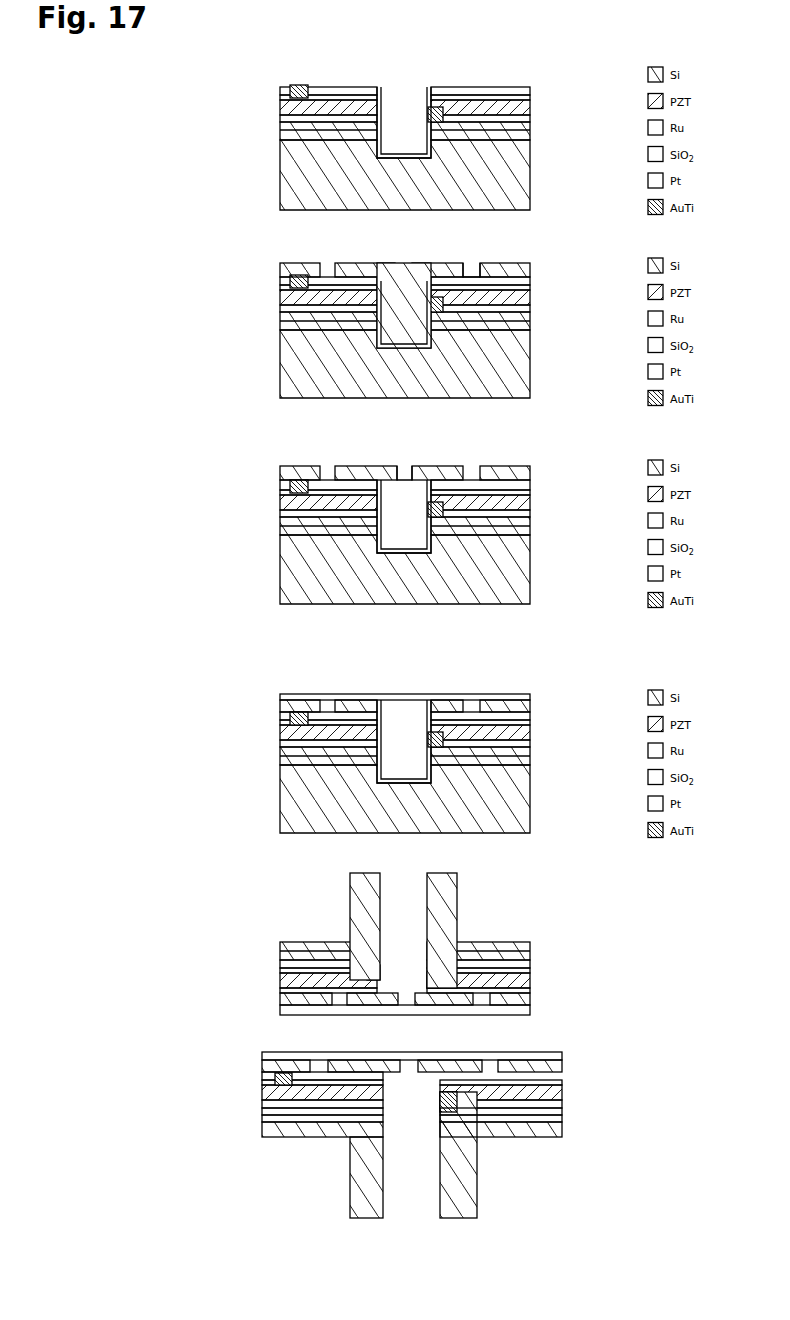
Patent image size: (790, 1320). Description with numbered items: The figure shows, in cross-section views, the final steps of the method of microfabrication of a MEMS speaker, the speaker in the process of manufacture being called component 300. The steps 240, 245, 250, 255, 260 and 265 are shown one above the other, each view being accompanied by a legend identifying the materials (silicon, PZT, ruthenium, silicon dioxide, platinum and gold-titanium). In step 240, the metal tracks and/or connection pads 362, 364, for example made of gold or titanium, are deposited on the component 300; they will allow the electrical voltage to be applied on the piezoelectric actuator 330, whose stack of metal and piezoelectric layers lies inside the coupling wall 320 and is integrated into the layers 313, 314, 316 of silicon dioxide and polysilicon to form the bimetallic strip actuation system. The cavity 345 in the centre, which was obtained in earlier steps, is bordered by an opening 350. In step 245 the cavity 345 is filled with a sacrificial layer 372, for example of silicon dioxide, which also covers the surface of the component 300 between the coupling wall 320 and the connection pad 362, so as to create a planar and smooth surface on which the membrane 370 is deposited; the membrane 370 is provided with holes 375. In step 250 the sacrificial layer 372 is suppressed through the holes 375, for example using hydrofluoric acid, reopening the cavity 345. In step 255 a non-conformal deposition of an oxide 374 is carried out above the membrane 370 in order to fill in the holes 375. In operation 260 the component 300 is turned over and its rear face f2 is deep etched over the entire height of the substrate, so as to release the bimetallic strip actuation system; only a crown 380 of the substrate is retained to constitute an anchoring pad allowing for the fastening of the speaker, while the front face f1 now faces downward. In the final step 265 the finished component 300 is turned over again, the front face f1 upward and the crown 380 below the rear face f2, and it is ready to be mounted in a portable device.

The step 240 is at (172, 113).
The step 245 is at (172, 305).
The step 250 is at (172, 501).
The step 255 is at (172, 736).
The operation 260 is at (159, 921).
The final step 265 is at (159, 1063).
The component 300 is at (250, 162).
The layer 313 is at (562, 1126).
The layer 314 is at (562, 1137).
The oxidation layer 316 is at (562, 1112).
The coupling wall 320 is at (282, 98).
The piezoelectric actuator 330 is at (415, 1114).
The cavity 345 is at (420, 147).
The trench opening 350 is at (379, 88).
The connection pad 362 is at (298, 85).
The connection pad 364 is at (440, 106).
The membrane 370 is at (352, 264).
The sacrificial layer 372 is at (403, 290).
The oxide 374 is at (410, 695).
The holes 375 is at (470, 265).
The crown 380 is at (452, 900).
The front face f1 is at (318, 1019).
The rear face f2 is at (466, 862).